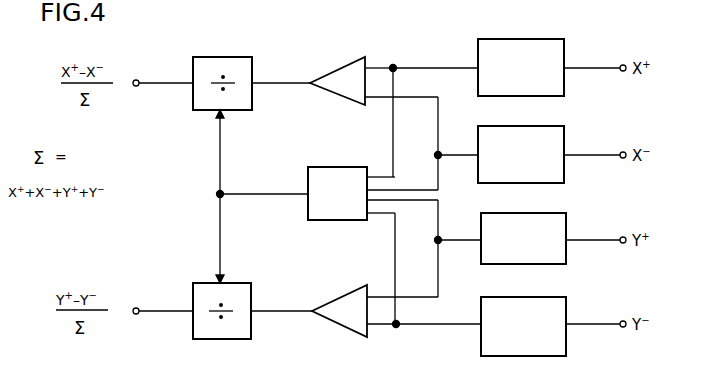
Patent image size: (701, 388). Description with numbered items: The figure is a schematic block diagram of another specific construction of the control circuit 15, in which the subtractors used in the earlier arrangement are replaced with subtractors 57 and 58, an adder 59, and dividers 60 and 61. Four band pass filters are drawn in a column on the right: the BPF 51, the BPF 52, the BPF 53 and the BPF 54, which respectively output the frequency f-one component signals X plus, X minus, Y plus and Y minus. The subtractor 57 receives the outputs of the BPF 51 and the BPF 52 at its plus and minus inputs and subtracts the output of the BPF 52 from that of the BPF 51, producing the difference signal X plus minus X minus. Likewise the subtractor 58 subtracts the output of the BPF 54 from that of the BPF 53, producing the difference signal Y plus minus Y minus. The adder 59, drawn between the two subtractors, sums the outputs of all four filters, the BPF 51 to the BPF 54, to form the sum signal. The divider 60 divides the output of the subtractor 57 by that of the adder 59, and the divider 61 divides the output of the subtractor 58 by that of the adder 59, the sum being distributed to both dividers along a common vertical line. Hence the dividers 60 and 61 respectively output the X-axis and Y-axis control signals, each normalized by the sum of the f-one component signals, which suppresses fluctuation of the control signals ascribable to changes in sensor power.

The control circuit 15 is at (310, 68).
The BPF 51 is at (535, 39).
The BPF 52 is at (532, 126).
The BPF 53 is at (532, 213).
The BPF 54 is at (532, 297).
The subtractor 57 is at (331, 72).
The subtractor 58 is at (337, 296).
The adder 59 is at (335, 167).
The divider 60 is at (222, 57).
The divider 61 is at (231, 283).